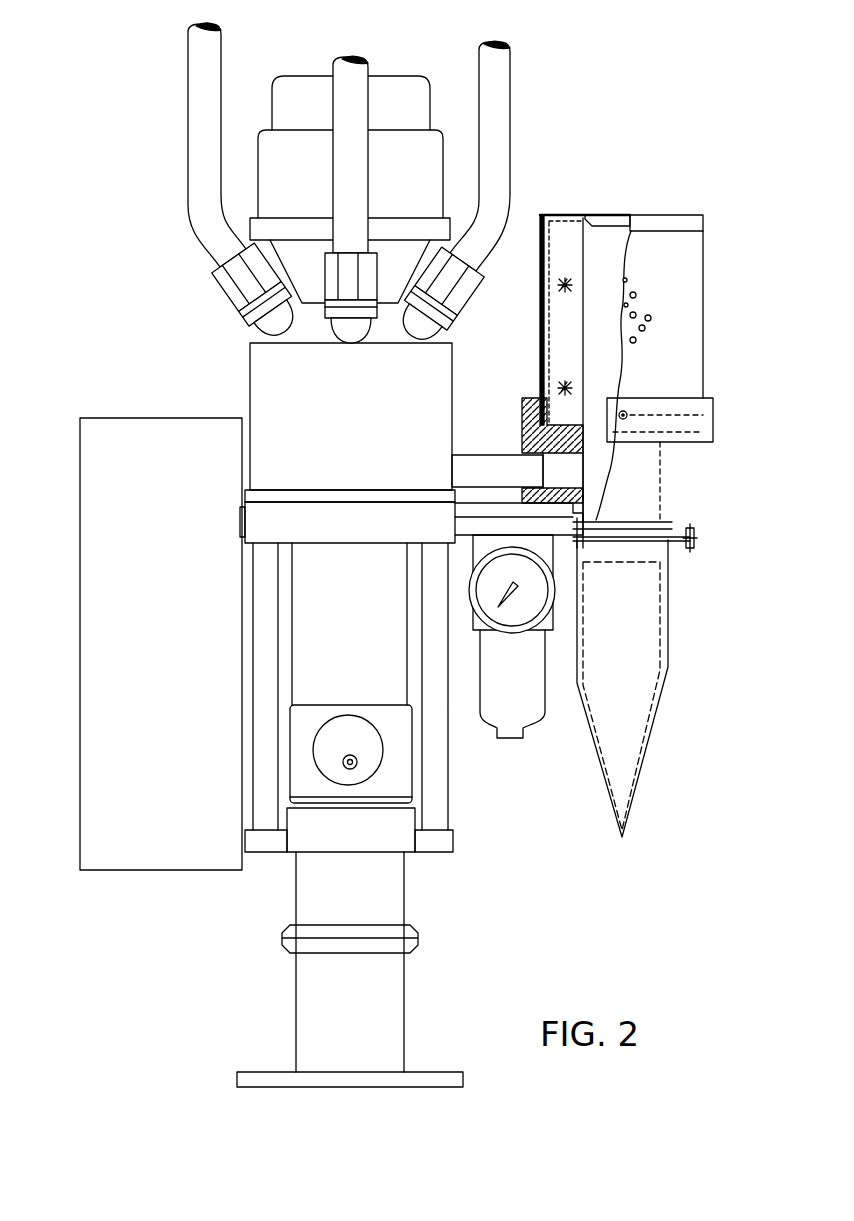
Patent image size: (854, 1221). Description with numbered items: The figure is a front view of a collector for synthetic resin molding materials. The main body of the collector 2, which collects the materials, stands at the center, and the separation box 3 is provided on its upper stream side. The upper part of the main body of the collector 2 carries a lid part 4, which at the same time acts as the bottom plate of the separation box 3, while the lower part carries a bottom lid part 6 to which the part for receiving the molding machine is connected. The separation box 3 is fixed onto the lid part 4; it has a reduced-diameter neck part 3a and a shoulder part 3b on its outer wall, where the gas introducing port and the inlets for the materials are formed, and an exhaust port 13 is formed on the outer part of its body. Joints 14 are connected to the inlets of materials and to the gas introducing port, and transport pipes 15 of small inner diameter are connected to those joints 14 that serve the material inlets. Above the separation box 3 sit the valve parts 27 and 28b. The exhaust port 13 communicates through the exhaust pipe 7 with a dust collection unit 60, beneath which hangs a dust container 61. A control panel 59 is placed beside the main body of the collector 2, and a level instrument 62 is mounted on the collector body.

The main body of the collector 2 is at (407, 633).
The separation box 3 is at (457, 384).
The neck part 3a is at (392, 335).
The shoulder part 3b is at (310, 332).
The lid part 4 is at (245, 512).
The bottom lid part 6 is at (448, 843).
The exhaust pipe 7 is at (492, 458).
The exhaust port 13 is at (458, 468).
The joint 14 is at (270, 334).
The transport pipe 15 is at (222, 42).
The valve body 27 is at (258, 142).
The valve cap 28b is at (315, 82).
The control panel 59 is at (80, 814).
The dust collection unit 60 is at (707, 230).
The dust container 61 is at (653, 664).
The level instrument 62 is at (373, 751).